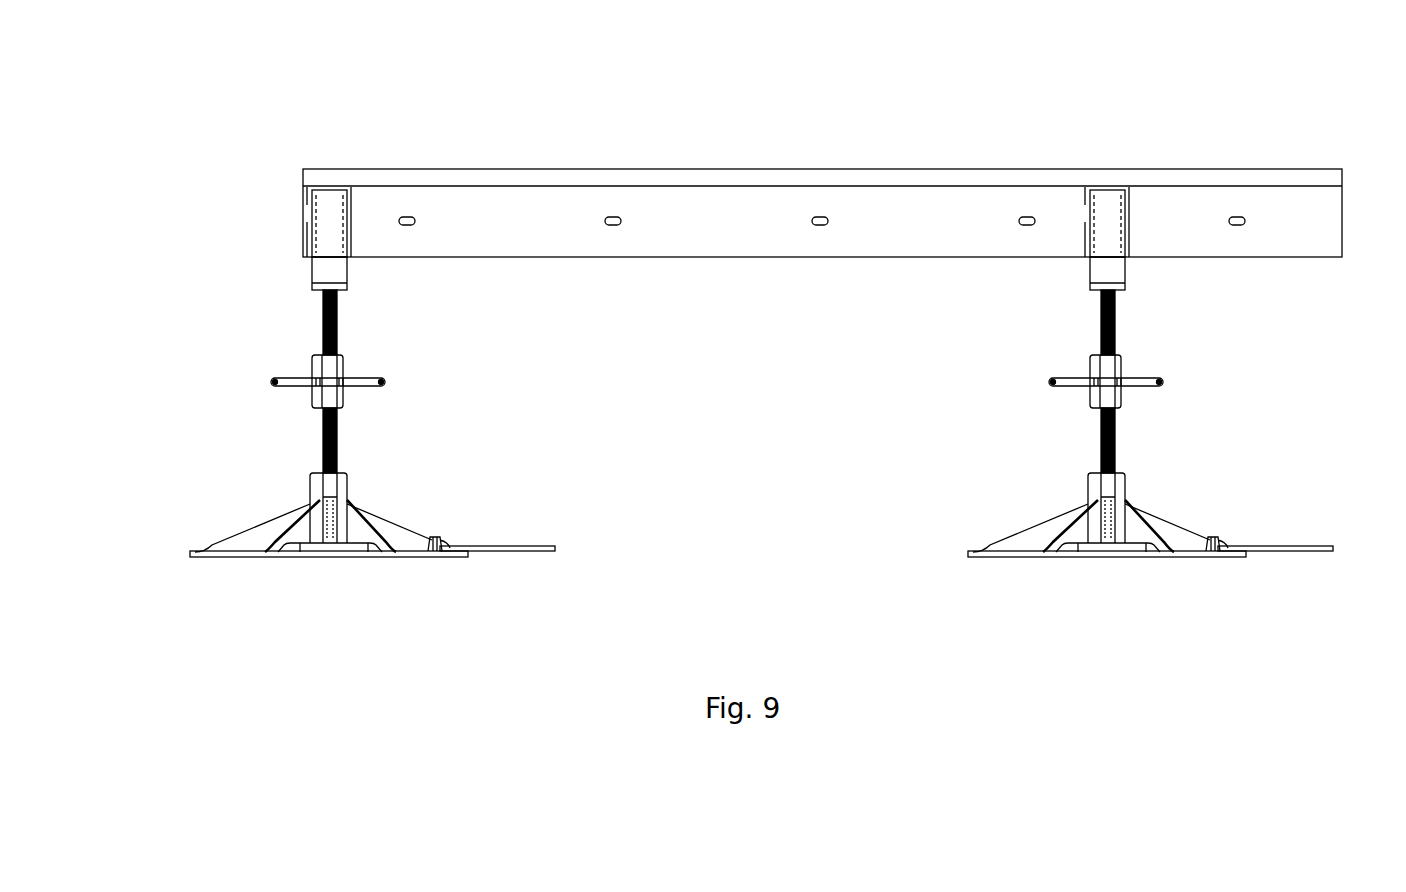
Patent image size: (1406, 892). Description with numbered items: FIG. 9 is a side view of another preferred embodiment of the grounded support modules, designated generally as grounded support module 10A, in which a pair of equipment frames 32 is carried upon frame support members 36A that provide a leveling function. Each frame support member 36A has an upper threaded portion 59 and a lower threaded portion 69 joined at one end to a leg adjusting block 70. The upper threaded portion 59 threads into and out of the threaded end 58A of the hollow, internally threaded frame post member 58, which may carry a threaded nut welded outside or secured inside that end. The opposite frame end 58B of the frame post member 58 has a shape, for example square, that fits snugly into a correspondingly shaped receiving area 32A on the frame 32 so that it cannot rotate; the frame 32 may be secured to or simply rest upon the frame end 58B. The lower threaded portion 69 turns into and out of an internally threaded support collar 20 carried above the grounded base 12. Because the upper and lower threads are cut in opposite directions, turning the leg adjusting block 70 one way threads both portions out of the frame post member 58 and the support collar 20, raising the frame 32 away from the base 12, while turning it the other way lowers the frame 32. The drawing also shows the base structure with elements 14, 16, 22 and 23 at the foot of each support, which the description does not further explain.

The frame 32 is at (822, 168).
The receiving area 32A is at (355, 200).
The frame end 58B is at (324, 218).
The frame post member 58 is at (300, 270).
The threaded end 58A is at (358, 286).
The upper threaded portion 59 is at (353, 328).
The frame support member 36A is at (203, 354).
The leg adjusting block 70 is at (302, 400).
The lower threaded portion 69 is at (358, 439).
The support collar 20 is at (1080, 473).
The grounded support module 10A is at (193, 488).
The base support legs 14 is at (1130, 487).
The clip 22 is at (445, 528).
The base plate 16 is at (248, 543).
The strip 23 is at (535, 558).
The base 12 is at (968, 557).